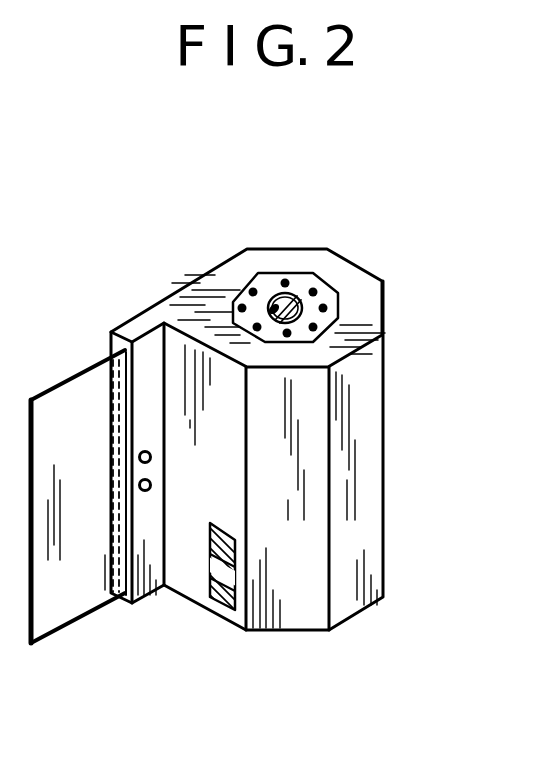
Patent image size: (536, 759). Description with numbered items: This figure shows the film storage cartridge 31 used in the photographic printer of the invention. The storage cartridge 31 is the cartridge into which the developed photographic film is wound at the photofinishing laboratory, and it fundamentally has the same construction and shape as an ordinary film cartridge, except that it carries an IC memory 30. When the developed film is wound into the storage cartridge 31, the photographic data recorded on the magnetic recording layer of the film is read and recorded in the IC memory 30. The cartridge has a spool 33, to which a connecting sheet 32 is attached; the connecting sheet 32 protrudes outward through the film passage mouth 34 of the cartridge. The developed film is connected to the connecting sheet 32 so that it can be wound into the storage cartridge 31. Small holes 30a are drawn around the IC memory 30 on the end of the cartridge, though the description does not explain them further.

The IC memory 30 is at (298, 278).
The holes 30a is at (317, 290).
The storage cartridge 31 is at (298, 632).
The connecting sheet 32 is at (88, 600).
The spool 33 is at (268, 300).
The film passage mouth 34 is at (118, 388).